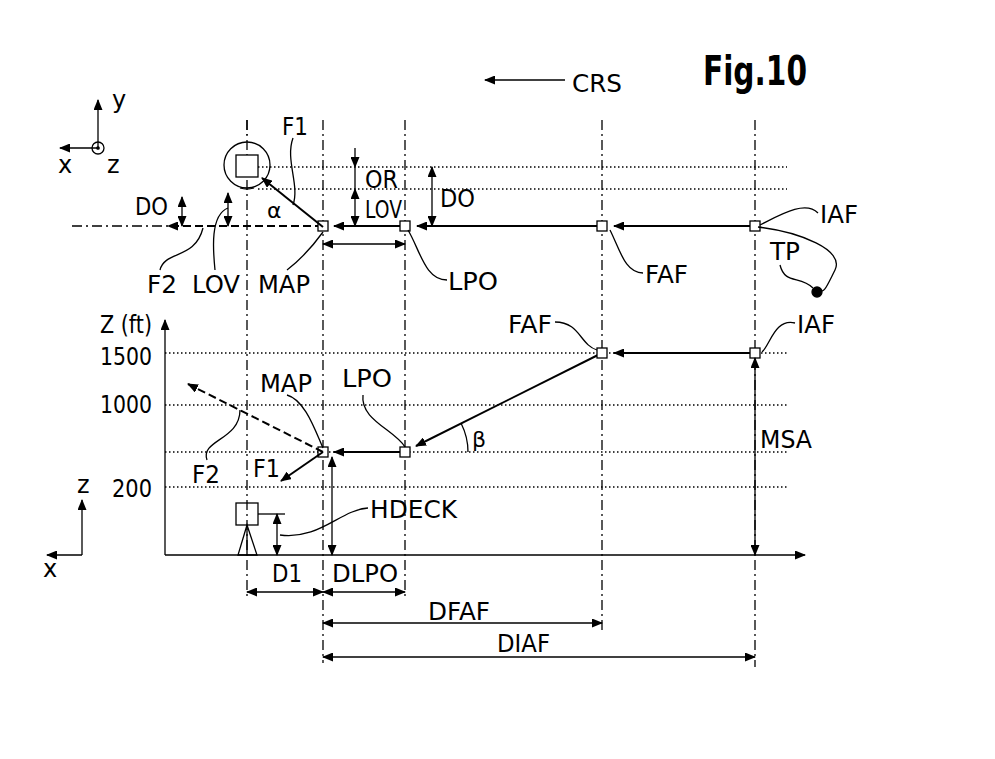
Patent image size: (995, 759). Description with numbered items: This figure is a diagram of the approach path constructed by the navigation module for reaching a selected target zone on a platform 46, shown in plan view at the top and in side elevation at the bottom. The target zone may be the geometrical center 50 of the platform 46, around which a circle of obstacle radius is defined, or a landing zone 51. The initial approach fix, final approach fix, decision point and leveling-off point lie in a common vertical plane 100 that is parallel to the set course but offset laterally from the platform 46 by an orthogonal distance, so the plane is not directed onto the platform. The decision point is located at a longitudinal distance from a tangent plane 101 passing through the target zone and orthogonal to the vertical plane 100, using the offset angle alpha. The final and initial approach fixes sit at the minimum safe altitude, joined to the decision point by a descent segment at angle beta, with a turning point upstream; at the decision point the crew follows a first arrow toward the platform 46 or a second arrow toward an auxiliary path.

The platform 46 is at (262, 133).
The geometrical center 50 is at (235, 165).
The landing zone 51 is at (247, 189).
The vertical plane 100 is at (108, 228).
The tangent plane 101 is at (247, 125).